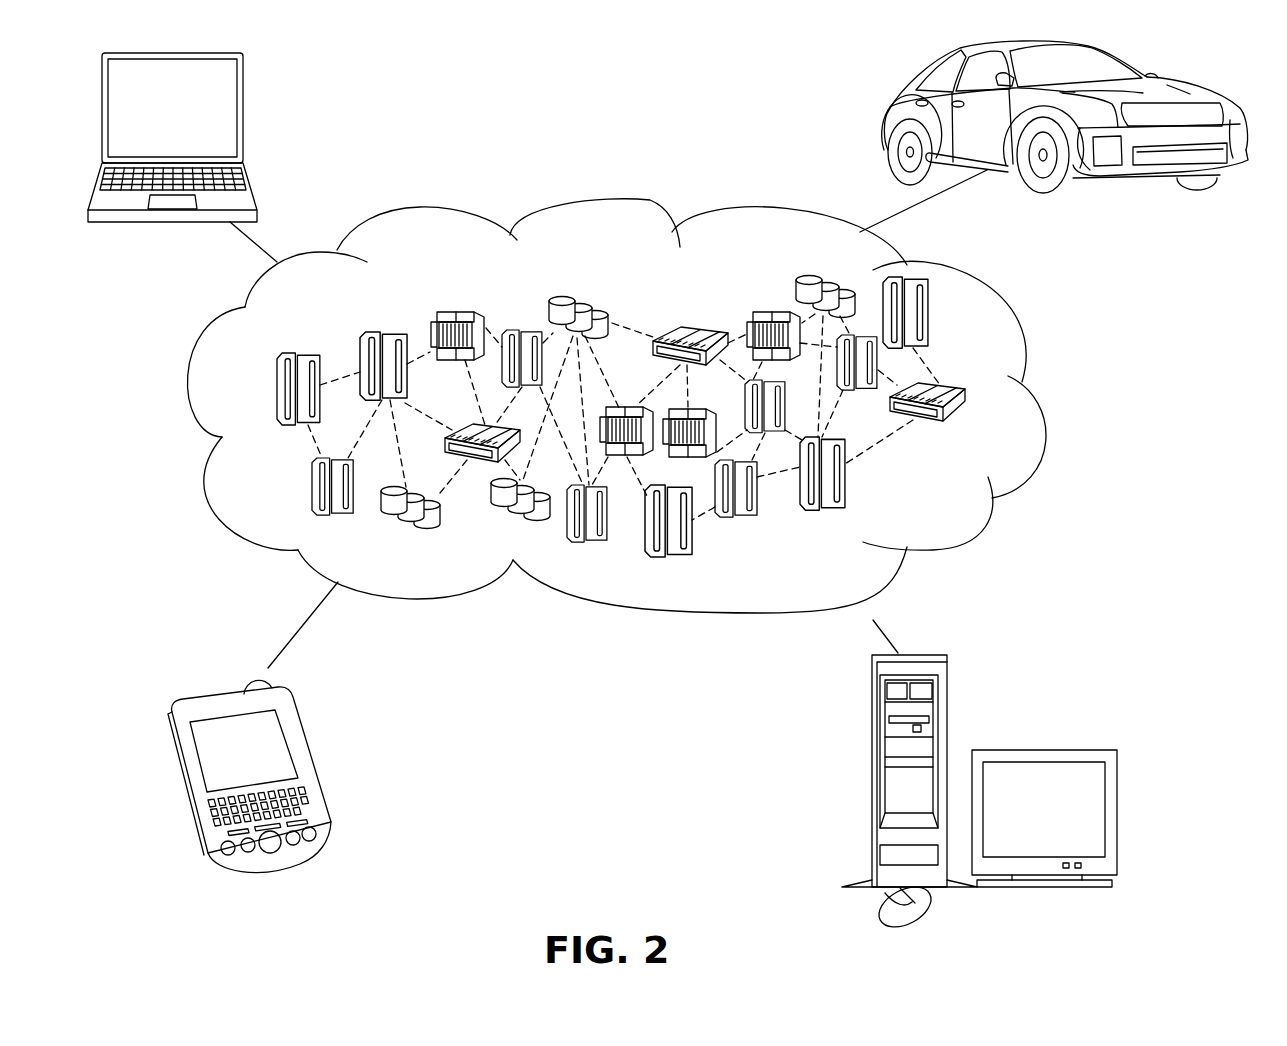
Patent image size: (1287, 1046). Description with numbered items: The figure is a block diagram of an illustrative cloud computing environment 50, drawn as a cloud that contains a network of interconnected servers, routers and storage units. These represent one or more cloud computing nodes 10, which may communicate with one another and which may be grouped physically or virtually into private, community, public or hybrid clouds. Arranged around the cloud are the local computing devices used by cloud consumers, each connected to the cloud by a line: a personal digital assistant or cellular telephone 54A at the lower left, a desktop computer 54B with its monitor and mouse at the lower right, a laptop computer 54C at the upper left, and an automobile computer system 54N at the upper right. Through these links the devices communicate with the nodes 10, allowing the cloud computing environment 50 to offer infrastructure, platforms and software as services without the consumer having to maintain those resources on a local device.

The cloud computing node 10 is at (948, 503).
The cloud computing environment 50 is at (1040, 398).
The personal digital assistant or cellular telephone 54A is at (300, 732).
The desktop computer 54B is at (870, 714).
The laptop computer 54C is at (244, 93).
The automobile computer system 54N is at (888, 110).